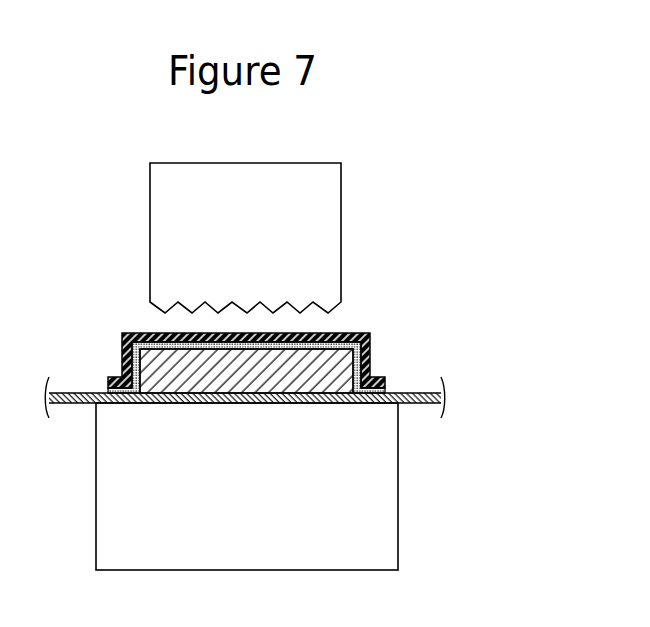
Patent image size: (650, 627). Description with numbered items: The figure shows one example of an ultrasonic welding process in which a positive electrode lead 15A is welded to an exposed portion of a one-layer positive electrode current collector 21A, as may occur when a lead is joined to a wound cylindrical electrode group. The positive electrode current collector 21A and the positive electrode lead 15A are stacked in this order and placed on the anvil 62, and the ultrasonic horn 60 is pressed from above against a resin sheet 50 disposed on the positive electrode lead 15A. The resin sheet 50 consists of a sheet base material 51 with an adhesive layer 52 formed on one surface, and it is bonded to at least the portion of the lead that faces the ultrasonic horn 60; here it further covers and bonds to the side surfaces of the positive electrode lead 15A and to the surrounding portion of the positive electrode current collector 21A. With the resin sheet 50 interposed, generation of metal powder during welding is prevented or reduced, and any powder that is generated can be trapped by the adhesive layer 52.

The ultrasonic horn 60 is at (258, 246).
The anvil 62 is at (262, 499).
The positive electrode current collector 21A is at (68, 388).
The positive electrode lead 15A is at (123, 345).
The resin sheet 50 is at (327, 348).
The sheet base material 51 is at (370, 333).
The adhesive layer 52 is at (370, 350).